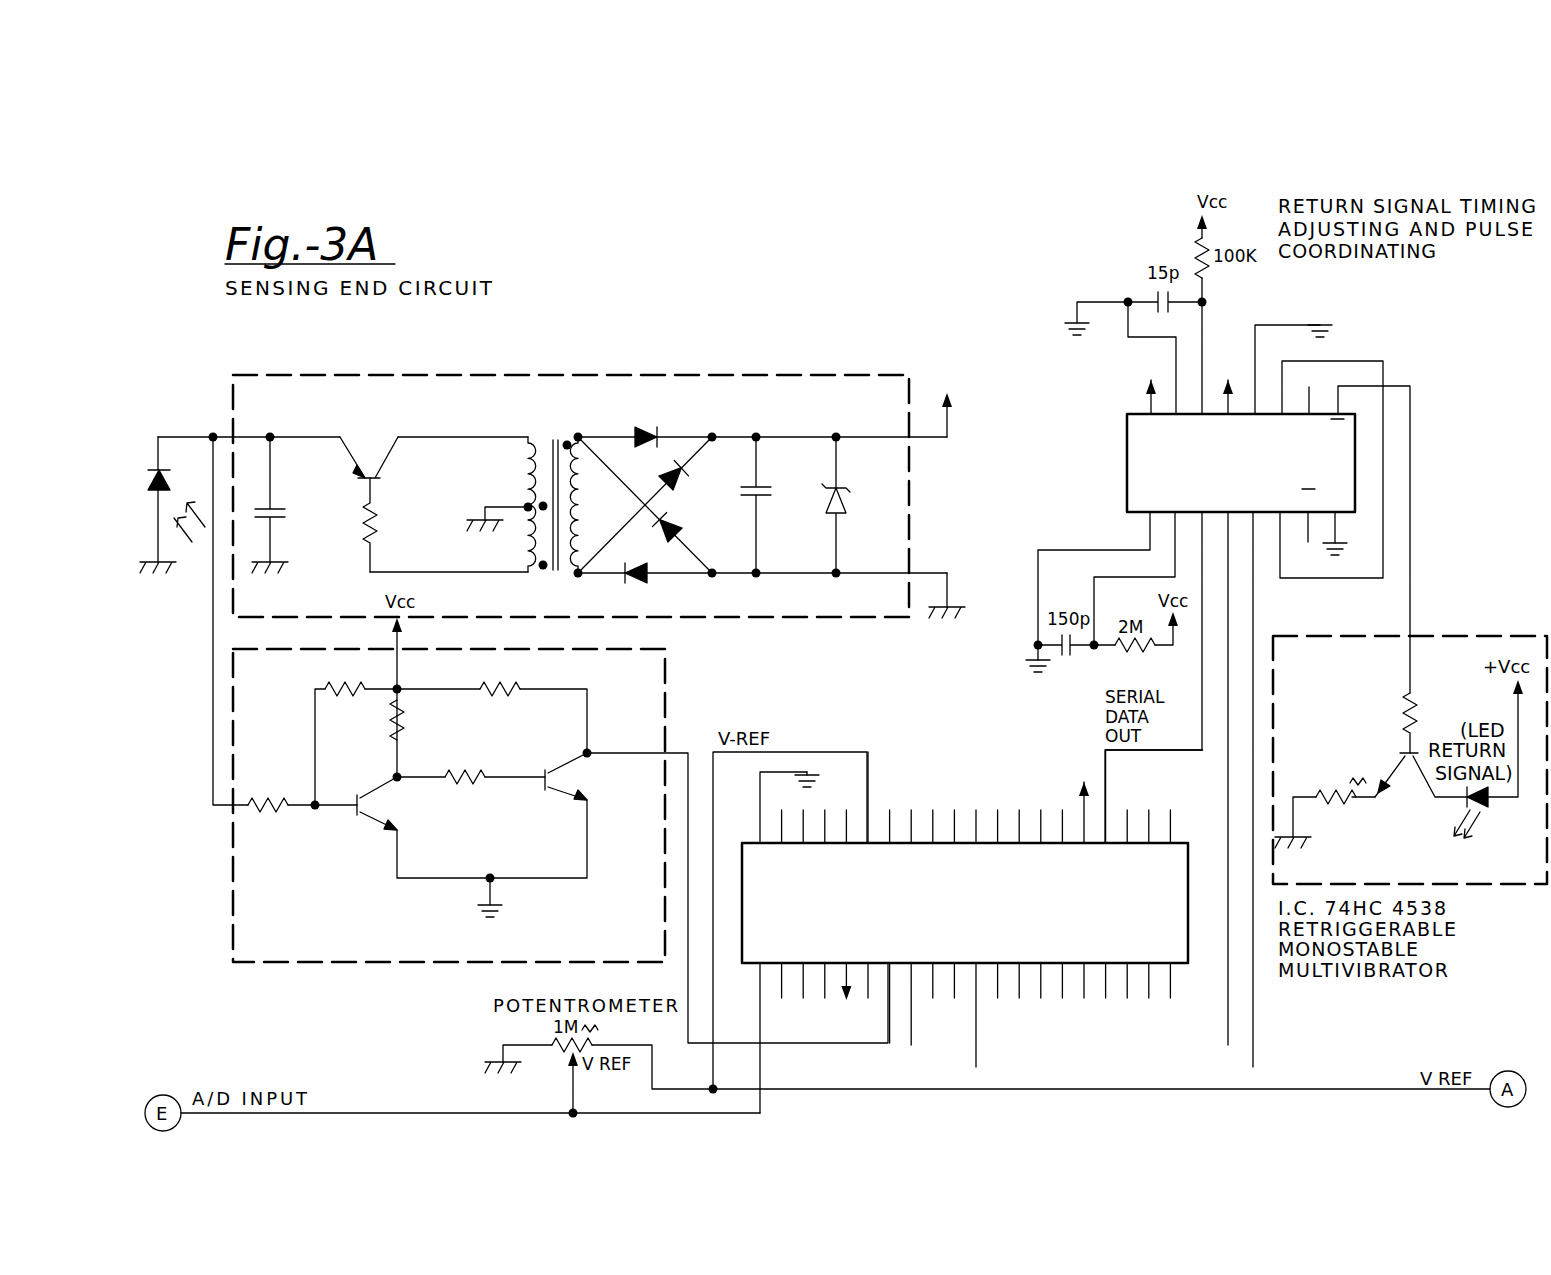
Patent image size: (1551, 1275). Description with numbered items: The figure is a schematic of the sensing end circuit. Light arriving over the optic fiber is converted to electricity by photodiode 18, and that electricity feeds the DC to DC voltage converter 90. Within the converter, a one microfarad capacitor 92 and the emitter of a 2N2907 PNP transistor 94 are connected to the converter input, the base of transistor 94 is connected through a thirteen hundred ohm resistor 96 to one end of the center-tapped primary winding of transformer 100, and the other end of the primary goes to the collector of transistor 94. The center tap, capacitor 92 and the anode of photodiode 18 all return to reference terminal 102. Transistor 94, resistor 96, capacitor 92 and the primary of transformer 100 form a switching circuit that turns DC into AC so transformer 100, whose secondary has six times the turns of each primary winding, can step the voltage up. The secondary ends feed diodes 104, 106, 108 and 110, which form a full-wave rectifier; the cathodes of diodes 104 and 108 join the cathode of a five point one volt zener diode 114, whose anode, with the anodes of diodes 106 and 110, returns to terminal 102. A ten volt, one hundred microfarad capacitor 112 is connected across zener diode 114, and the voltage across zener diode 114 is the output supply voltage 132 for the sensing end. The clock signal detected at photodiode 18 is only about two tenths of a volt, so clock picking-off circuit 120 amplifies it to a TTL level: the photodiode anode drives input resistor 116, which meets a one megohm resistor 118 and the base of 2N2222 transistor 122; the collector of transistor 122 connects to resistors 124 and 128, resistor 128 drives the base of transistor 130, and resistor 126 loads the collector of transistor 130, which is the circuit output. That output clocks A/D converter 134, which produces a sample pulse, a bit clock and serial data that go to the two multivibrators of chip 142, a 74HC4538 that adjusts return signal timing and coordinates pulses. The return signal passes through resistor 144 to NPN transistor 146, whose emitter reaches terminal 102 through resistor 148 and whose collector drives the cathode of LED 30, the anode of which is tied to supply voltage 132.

The photodiode 18 is at (156, 485).
The LED 30 is at (1485, 806).
The DC to DC voltage converter 90 is at (717, 375).
The capacitor 92 is at (285, 514).
The PNP transistor 94 is at (383, 463).
The resistor 96 is at (379, 533).
The transformer 100 is at (550, 445).
The reference terminal 102 is at (280, 568).
The diode 104 is at (650, 427).
The diode 106 is at (681, 529).
The diode 108 is at (683, 483).
The diode 110 is at (637, 582).
The filter capacitor 112 is at (767, 498).
The zener diode 114 is at (845, 514).
The input resistor 116 is at (268, 818).
The resistor 118 is at (345, 692).
The clock picking-off circuit 120 is at (233, 888).
The NPN transistor 122 is at (374, 822).
The resistor 124 is at (397, 744).
The resistor 126 is at (510, 699).
The resistor 128 is at (466, 788).
The transistor 130 is at (564, 798).
The output supply voltage 132 is at (929, 439).
The A/D converter 134 is at (1185, 843).
The chip 142 is at (1127, 469).
The resistor 144 is at (1403, 718).
The NPN transistor 146 is at (1423, 777).
The resistor 148 is at (1337, 806).